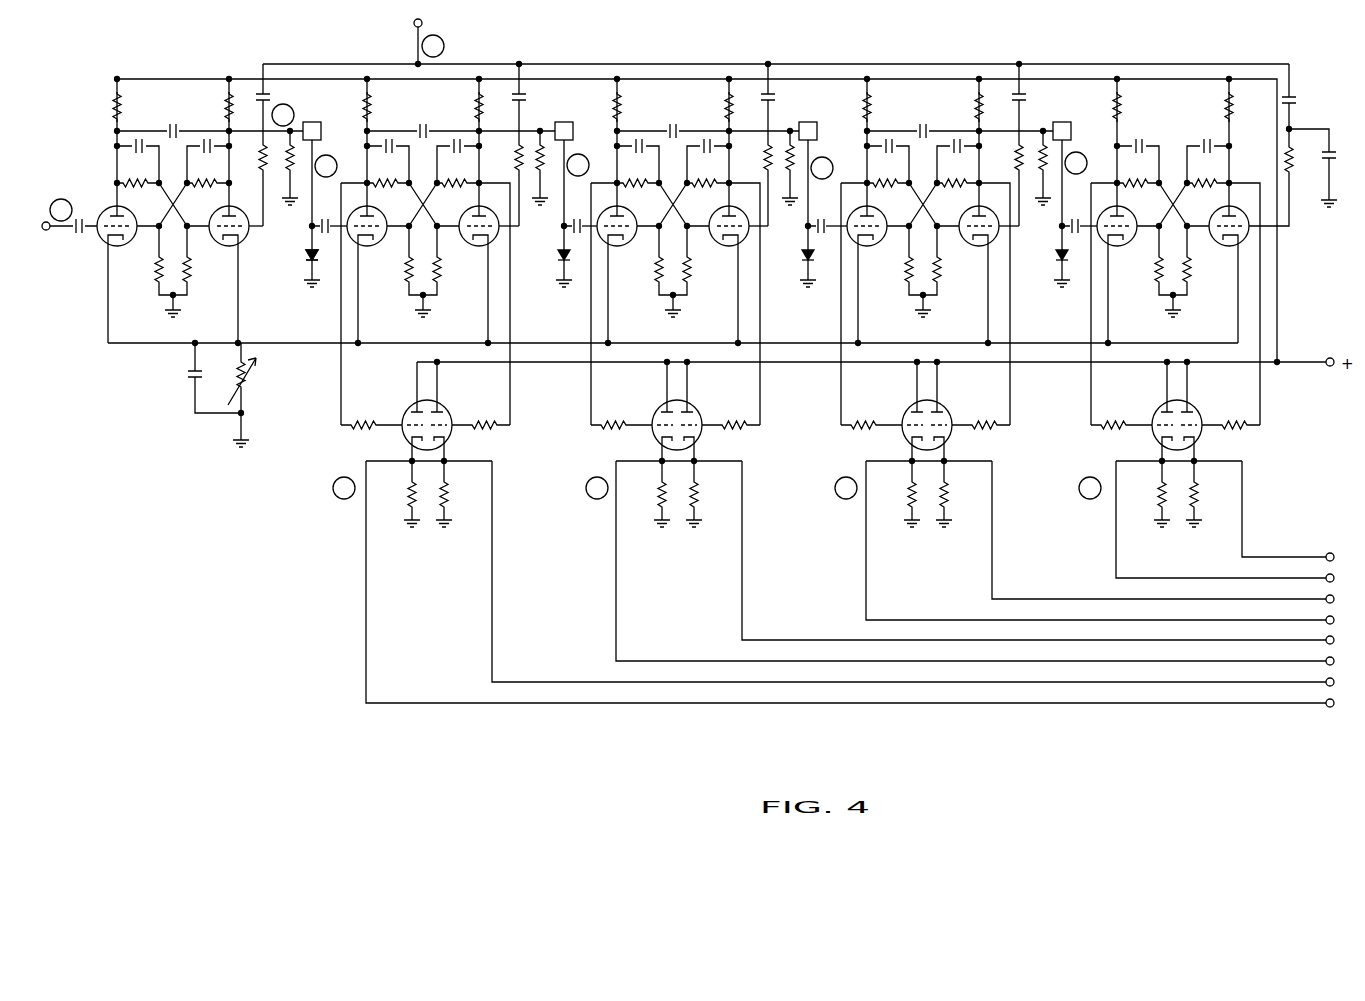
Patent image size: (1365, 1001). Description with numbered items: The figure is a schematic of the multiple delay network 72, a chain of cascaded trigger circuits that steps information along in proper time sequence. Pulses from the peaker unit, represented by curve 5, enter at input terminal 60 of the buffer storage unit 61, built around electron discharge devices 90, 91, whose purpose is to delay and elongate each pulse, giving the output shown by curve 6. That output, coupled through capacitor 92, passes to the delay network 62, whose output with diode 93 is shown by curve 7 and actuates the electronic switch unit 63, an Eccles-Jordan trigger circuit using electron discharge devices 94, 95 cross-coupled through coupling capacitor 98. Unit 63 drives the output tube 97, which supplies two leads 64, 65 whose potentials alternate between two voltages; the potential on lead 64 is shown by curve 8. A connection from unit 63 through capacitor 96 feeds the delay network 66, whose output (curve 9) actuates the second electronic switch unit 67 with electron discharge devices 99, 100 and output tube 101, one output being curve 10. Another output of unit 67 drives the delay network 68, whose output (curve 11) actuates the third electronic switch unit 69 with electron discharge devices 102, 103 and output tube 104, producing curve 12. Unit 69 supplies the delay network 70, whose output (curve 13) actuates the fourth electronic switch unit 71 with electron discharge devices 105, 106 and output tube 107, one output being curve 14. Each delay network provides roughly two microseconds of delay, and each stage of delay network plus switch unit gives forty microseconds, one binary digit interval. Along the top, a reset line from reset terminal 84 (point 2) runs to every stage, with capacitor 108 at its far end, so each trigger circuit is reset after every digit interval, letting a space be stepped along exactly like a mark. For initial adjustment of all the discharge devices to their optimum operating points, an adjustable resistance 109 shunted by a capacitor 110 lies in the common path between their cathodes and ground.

The reset terminal point 2 is at (433, 46).
The curve 5 (peaker output) 5 is at (61, 210).
The curve 6 (buffer storage output) 6 is at (283, 115).
The curve 7 (delay network output) 7 is at (326, 166).
The curve 8 (lead 64 potential) 8 is at (344, 488).
The curve 9 (delay network output) 9 is at (578, 165).
The curve 10 (switch unit output) 10 is at (597, 488).
The curve 11 (delay network output) 11 is at (822, 168).
The curve 12 (switch unit output) 12 is at (846, 488).
The curve 13 (delay network output) 13 is at (1076, 163).
The curve 14 (switch unit output) 14 is at (1090, 488).
The input terminal 60 is at (46, 230).
The buffer storage unit 61 is at (200, 211).
The delay network 62 is at (322, 130).
The electronic switch unit 63 is at (448, 251).
The lead 64 is at (366, 572).
The lead 65 is at (492, 572).
The delay network 66 is at (574, 128).
The second electronic switch unit 67 is at (695, 251).
The delay network 68 is at (818, 126).
The third electronic switch unit 69 is at (947, 251).
The delay network 70 is at (1071, 124).
The fourth electronic switch unit 71 is at (1175, 251).
The multiple delay network 72 is at (744, 49).
The reset terminal 84 is at (413, 25).
The electron discharge device 90 is at (114, 245).
The electron discharge device 91 is at (232, 246).
The capacitor 92 is at (271, 97).
The diode 93 is at (307, 260).
The electron discharge device 94 is at (364, 245).
The electron discharge device 95 is at (482, 246).
The capacitor 96 is at (527, 97).
The output tube 97 is at (444, 414).
The coupling capacitor 98 is at (430, 128).
The electron discharge device 99 is at (614, 245).
The electron discharge device 100 is at (732, 246).
The output tube 101 is at (694, 414).
The electron discharge device 102 is at (864, 245).
The electron discharge device 103 is at (982, 246).
The output tube 104 is at (944, 414).
The electron discharge device 105 is at (1114, 245).
The electron discharge device 106 is at (1232, 246).
The output tube 107 is at (1192, 412).
The capacitor 108 is at (1297, 100).
The adjustable resistance 109 is at (248, 388).
The capacitor 110 is at (186, 381).